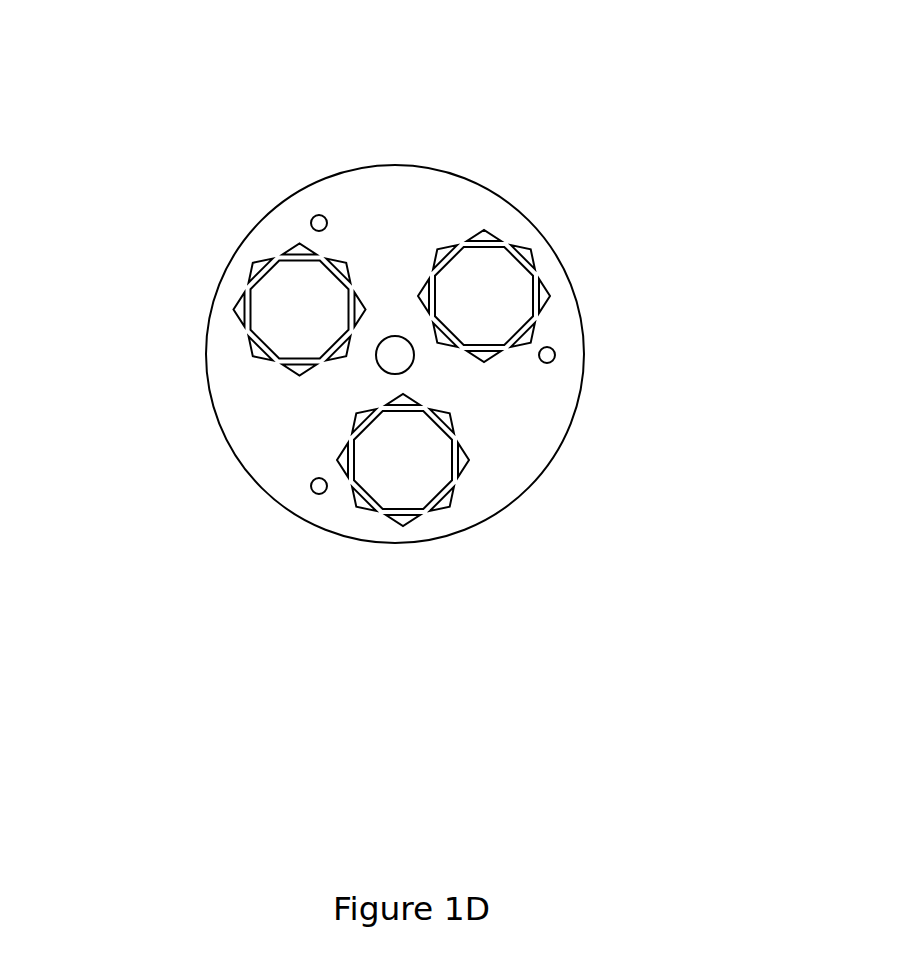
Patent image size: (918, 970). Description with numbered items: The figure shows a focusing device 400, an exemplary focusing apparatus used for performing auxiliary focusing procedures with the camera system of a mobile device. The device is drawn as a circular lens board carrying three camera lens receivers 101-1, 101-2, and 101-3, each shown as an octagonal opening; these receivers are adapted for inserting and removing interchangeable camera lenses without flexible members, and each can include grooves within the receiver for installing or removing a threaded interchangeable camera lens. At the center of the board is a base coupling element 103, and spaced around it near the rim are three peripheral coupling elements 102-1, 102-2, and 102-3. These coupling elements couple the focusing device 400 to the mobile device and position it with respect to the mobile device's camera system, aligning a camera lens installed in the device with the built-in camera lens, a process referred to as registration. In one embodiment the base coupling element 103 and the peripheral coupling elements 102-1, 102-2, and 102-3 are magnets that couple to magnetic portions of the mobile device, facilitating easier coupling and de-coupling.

The focusing device 400 is at (520, 195).
The base coupling element 103 is at (395, 352).
The peripheral coupling element 102-1 is at (319, 486).
The peripheral coupling element 102-2 is at (319, 223).
The peripheral coupling element 102-3 is at (718, 425).
The camera lens receiver 101-1 is at (434, 474).
The camera lens receiver 101-2 is at (331, 322).
The camera lens receiver 101-3 is at (514, 309).